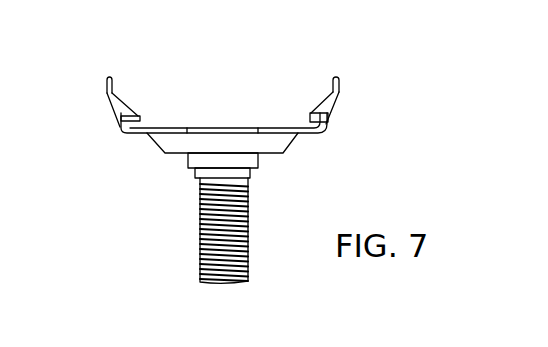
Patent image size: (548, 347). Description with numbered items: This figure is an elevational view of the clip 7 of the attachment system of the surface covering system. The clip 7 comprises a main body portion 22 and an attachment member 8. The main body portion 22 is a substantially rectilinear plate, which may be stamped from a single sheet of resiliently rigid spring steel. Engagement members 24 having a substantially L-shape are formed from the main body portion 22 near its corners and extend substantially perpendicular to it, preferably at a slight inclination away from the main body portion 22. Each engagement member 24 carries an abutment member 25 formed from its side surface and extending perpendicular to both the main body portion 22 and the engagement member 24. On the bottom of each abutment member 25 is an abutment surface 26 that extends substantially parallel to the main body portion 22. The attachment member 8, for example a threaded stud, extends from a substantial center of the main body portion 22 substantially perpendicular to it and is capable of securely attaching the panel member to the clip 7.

The clip 7 is at (372, 146).
The attachment member 8 is at (200, 180).
The main body portion 22 is at (137, 136).
The engagement member 24 is at (105, 82).
The abutment member 25 is at (128, 103).
The abutment surface 26 is at (140, 120).